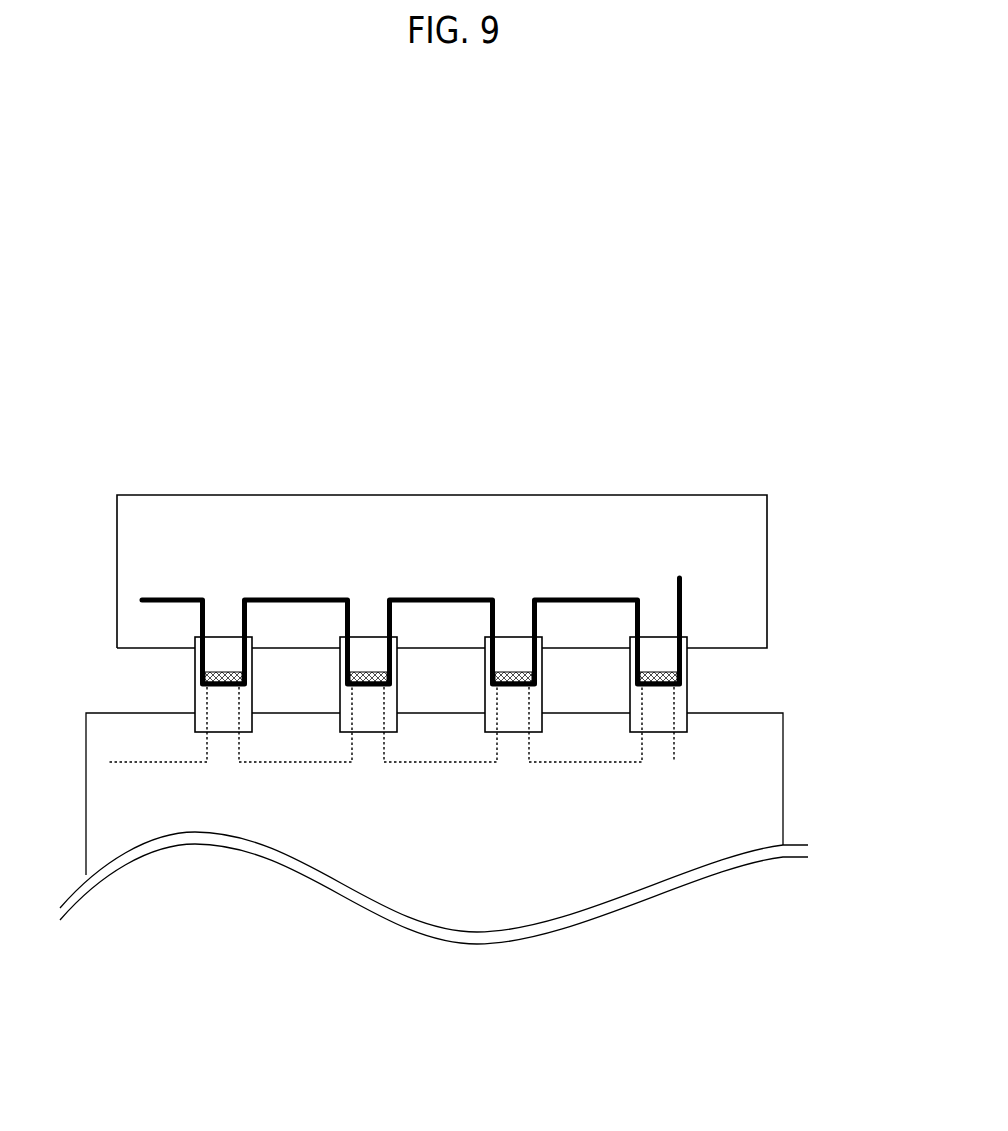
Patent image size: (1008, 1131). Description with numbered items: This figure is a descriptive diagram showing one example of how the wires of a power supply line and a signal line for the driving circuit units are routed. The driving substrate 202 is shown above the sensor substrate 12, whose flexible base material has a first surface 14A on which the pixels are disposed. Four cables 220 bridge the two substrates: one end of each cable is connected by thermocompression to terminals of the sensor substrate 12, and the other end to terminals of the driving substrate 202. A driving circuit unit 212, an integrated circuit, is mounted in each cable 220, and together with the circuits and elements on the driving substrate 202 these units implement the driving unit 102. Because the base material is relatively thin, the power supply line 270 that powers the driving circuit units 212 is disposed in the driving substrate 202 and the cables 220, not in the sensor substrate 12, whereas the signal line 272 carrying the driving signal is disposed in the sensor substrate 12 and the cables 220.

The driving unit 102 is at (860, 588).
The driving substrate 202 is at (767, 595).
The driving circuit unit 212 is at (687, 672).
The cable 220 is at (687, 690).
The power supply line 270 is at (175, 598).
The signal line 272 is at (160, 763).
The sensor substrate 12 is at (104, 830).
The first surface 14A is at (752, 798).